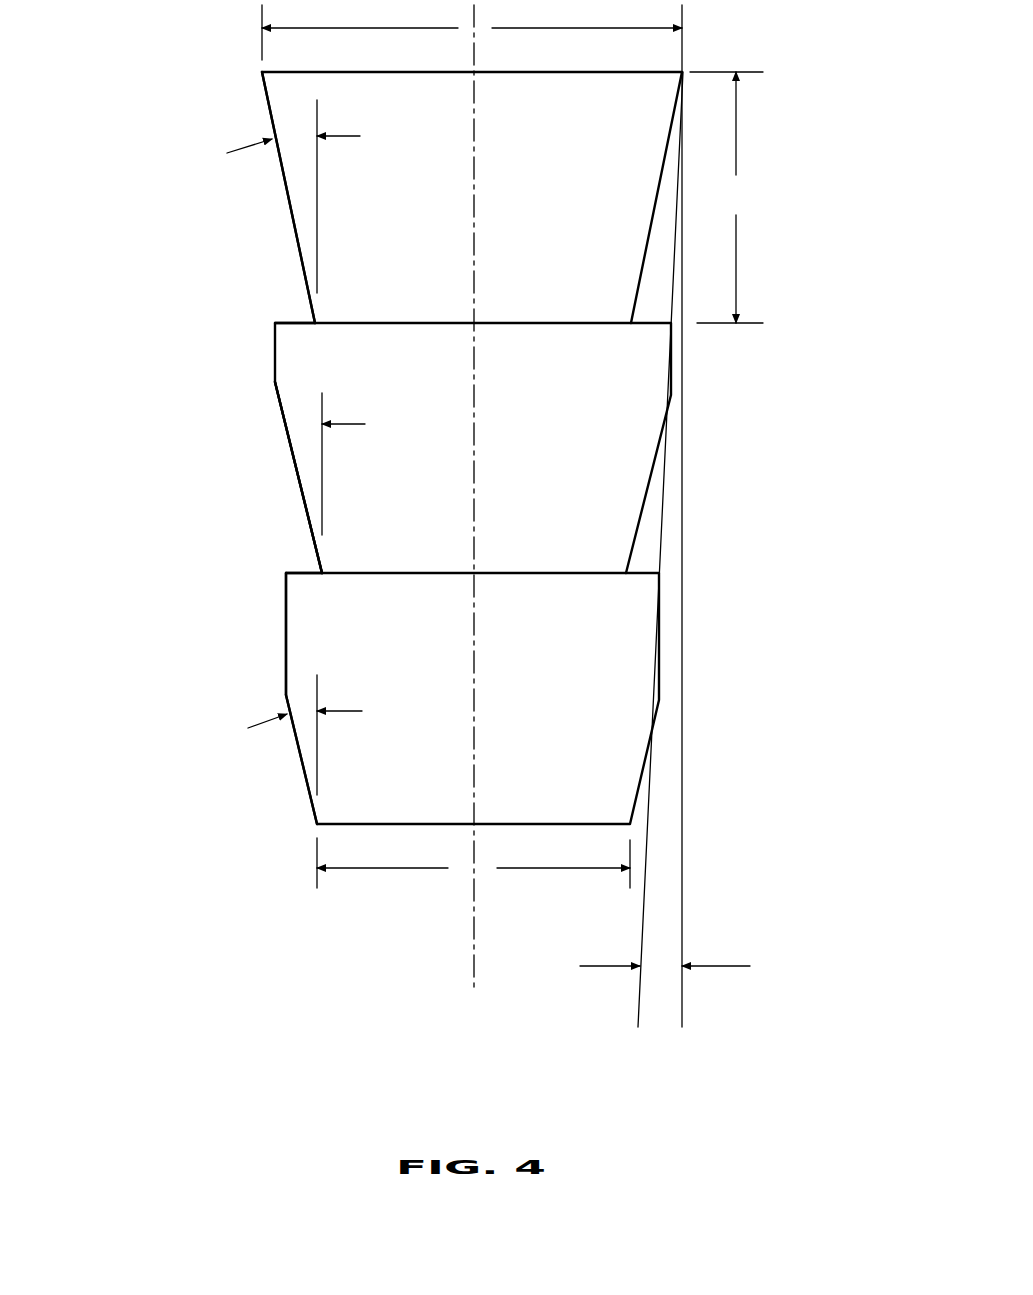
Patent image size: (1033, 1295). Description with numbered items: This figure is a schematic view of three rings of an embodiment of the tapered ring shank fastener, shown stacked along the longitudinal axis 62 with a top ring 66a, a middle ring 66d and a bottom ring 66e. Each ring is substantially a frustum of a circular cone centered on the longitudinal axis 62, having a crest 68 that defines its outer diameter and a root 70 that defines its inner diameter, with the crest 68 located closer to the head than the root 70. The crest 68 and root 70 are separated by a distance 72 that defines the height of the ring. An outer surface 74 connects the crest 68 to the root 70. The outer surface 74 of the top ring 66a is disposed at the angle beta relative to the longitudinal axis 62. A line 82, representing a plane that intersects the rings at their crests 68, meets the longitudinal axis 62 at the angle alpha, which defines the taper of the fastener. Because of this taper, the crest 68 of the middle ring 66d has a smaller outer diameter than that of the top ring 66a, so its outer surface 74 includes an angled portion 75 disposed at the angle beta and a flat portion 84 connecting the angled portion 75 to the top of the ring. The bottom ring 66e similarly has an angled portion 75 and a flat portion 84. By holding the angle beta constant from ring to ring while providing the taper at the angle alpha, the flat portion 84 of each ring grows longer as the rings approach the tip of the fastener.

The longitudinal axis 62 is at (472, 975).
The top ring 66a is at (238, 191).
The middle ring 66d is at (207, 422).
The bottom ring 66e is at (250, 748).
The crest 68 is at (472, 32).
The root 70 is at (473, 863).
The distance 72 is at (726, 197).
The outer surface 74 is at (293, 229).
The angled portion 75 is at (300, 490).
The line 82 is at (641, 928).
The flat portion 84 is at (273, 342).